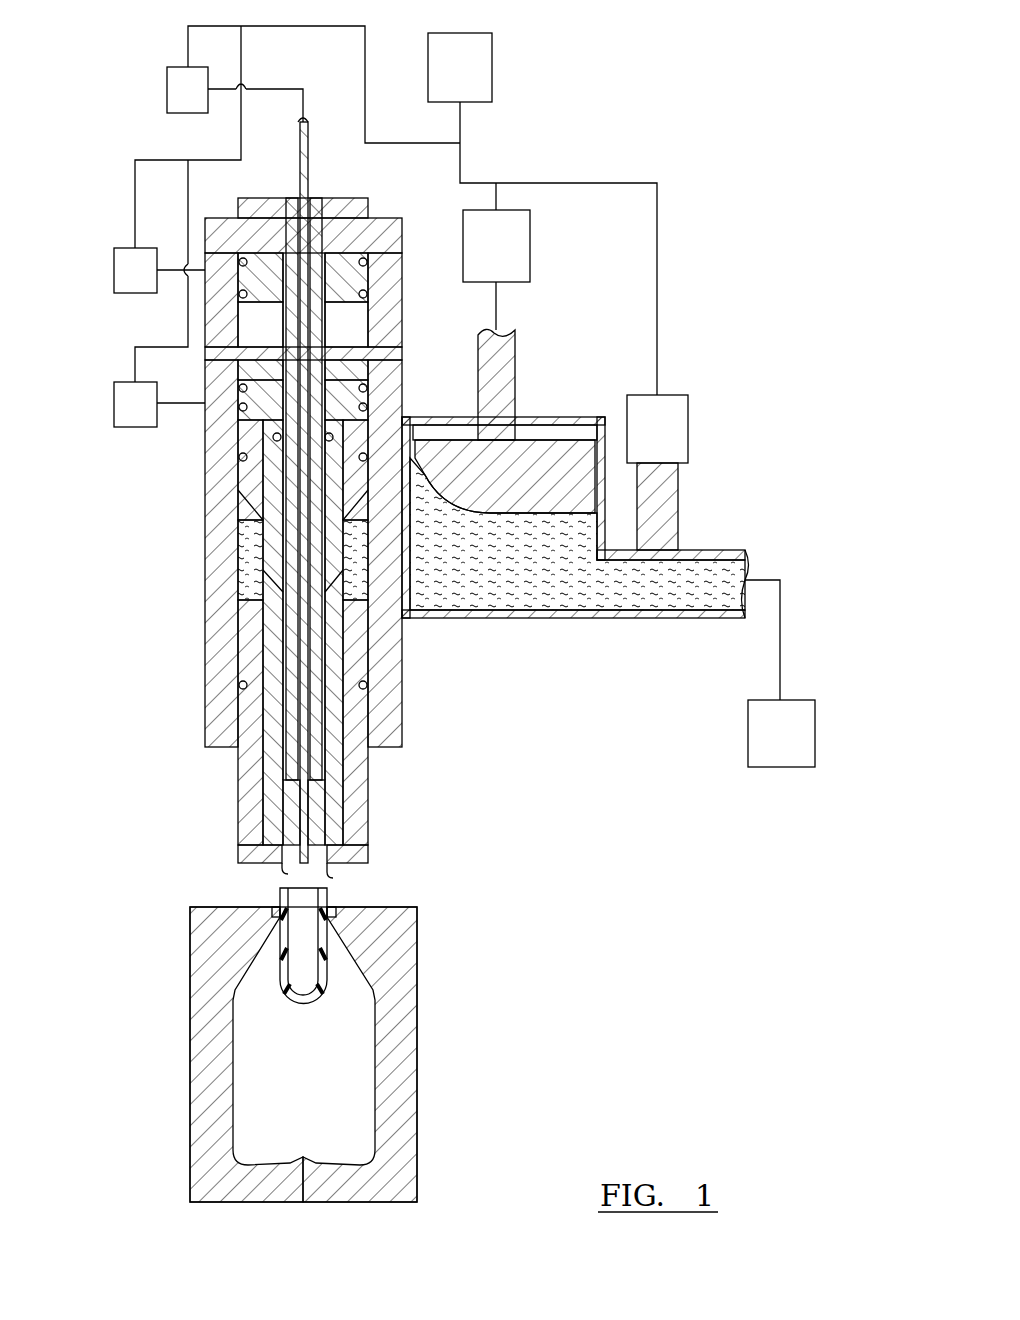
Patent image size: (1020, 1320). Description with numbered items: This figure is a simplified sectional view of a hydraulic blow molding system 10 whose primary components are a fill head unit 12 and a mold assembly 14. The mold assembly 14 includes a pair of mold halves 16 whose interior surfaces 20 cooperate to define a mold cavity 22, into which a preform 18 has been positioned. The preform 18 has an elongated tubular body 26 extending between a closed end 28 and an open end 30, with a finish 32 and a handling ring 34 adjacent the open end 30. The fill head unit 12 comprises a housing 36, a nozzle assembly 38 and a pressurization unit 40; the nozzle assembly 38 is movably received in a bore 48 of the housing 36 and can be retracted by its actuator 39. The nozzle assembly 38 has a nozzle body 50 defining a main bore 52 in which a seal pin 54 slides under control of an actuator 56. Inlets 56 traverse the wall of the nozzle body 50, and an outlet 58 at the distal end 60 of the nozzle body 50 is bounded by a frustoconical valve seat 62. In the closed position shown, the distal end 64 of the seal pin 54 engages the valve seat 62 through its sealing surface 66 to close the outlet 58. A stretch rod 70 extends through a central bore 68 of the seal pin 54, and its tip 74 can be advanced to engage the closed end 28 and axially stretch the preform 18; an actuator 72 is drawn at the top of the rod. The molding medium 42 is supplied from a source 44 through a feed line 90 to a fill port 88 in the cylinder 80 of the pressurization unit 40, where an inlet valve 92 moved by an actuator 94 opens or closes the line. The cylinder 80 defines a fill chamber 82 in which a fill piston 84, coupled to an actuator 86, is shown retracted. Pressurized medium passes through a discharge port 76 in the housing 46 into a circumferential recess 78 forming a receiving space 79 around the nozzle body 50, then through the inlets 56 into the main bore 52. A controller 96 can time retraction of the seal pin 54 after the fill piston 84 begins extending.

The molding system 10 is at (707, 104).
The fill head unit 12 is at (492, 737).
The mold assembly 14 is at (303, 1054).
The mold halves 16 is at (205, 1118).
The preform 18 is at (272, 975).
The interior surfaces 20 is at (370, 1025).
The mold cavity 22 is at (270, 1068).
The tubular body 26 is at (330, 945).
The closed end 28 is at (270, 1010).
The open end 30 is at (330, 905).
The finish 32 is at (290, 900).
The handling ring 34 is at (285, 915).
The housing 36 is at (405, 733).
The nozzle assembly 38 is at (383, 776).
The actuator 39 is at (136, 403).
The pressurization unit 40 is at (531, 655).
The molding medium 42 is at (500, 575).
The source 44 is at (780, 740).
The housing 46 is at (225, 487).
The bore 48 is at (247, 520).
The nozzle body 50 is at (258, 657).
The main bore 52 is at (270, 732).
The seal pin 54 is at (285, 793).
The actuator 56 is at (136, 270).
The outlet 58 is at (290, 870).
The distal end 60 is at (245, 838).
The valve seat 62 is at (320, 812).
The distal end 64 is at (250, 828).
The sealing surface 66 is at (325, 840).
The central bore 68 is at (313, 712).
The stretch rod 70 is at (272, 762).
The stem actuator 72 is at (190, 93).
The tip 74 is at (305, 878).
The discharge port 76 is at (383, 594).
The circumferential recess 78 is at (255, 565).
The receiving space 79 is at (255, 587).
The cylinder 80 is at (588, 455).
The fill chamber 82 is at (526, 540).
The fill piston 84 is at (483, 490).
The actuator 86 is at (500, 248).
The fill port 88 is at (600, 585).
The feed line 90 is at (735, 556).
The inlet valve 92 is at (665, 525).
The actuator 94 is at (660, 435).
The controller 96 is at (470, 68).